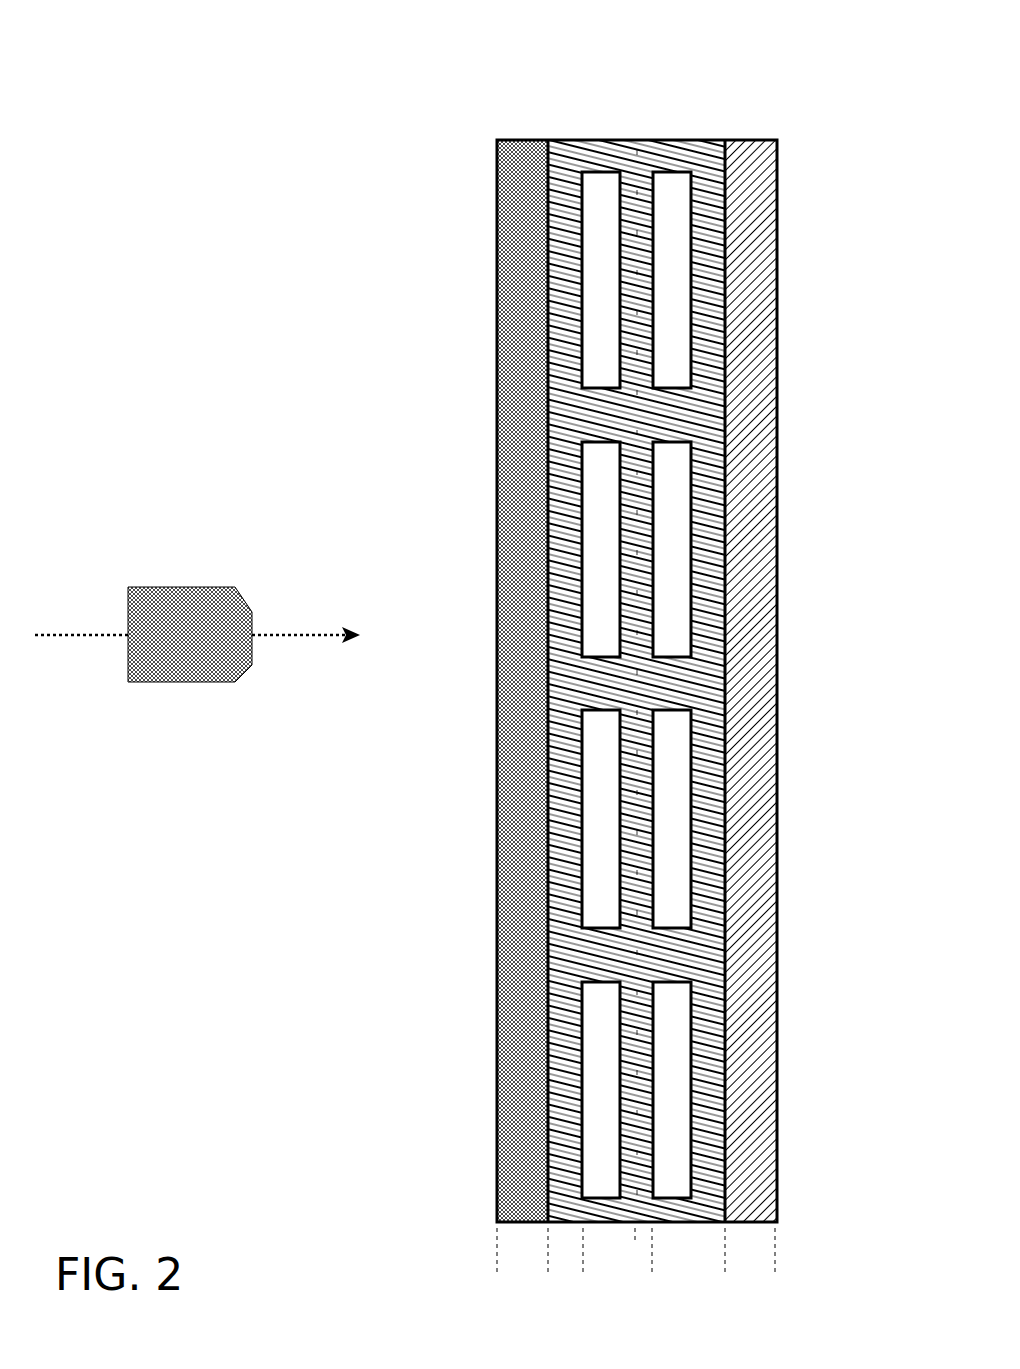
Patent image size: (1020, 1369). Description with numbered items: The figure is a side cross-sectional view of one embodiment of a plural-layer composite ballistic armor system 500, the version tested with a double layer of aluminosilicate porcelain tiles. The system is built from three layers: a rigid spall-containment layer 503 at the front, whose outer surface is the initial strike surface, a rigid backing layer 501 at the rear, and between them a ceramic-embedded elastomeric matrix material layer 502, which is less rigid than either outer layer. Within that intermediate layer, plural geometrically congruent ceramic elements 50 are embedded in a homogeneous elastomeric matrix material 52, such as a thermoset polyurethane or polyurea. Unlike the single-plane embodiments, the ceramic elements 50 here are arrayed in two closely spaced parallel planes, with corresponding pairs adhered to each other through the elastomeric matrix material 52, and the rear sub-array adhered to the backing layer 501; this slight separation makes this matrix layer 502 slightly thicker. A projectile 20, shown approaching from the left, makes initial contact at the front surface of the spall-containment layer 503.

The composite ballistic armor system 500 is at (258, 328).
The spall-containment layer 503 is at (548, 133).
The ceramic-embedded elastomeric matrix material layer 502 is at (725, 133).
The backing layer 501 is at (727, 133).
The ceramic elements 50 is at (634, 685).
The elastomeric matrix material 52 is at (730, 665).
The projectile 20 is at (197, 580).